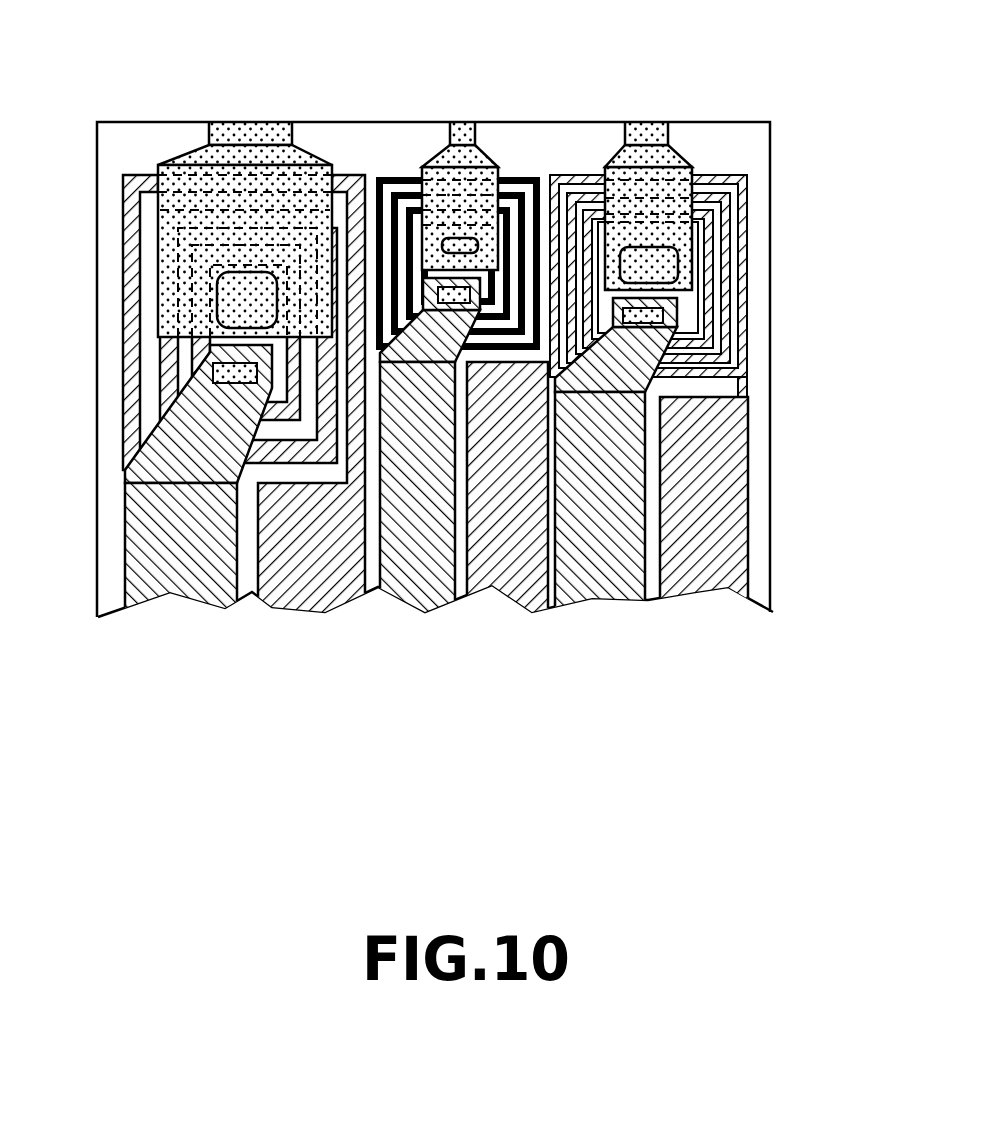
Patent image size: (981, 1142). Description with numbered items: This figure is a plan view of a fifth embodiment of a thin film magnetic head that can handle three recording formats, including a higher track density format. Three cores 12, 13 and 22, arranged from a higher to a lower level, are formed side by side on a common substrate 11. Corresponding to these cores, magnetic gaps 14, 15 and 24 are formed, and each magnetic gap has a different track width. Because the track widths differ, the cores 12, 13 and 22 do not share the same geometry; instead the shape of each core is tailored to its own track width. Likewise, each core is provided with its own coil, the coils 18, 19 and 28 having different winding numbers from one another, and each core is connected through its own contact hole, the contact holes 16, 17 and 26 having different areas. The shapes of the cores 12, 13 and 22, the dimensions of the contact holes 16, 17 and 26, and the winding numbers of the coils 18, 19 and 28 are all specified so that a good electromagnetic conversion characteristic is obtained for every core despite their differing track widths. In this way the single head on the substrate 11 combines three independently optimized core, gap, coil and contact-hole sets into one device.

The substrate 11 is at (760, 600).
The core 12 is at (485, 148).
The core 13 is at (185, 175).
The magnetic gap 14 is at (458, 118).
The magnetic gap 15 is at (265, 121).
The contact hole 16 is at (433, 165).
The contact hole 17 is at (243, 300).
The coil 18 is at (545, 177).
The coil 19 is at (125, 392).
The core 22 is at (675, 175).
The magnetic gap 24 is at (648, 118).
The contact hole 26 is at (680, 262).
The coil 28 is at (740, 325).